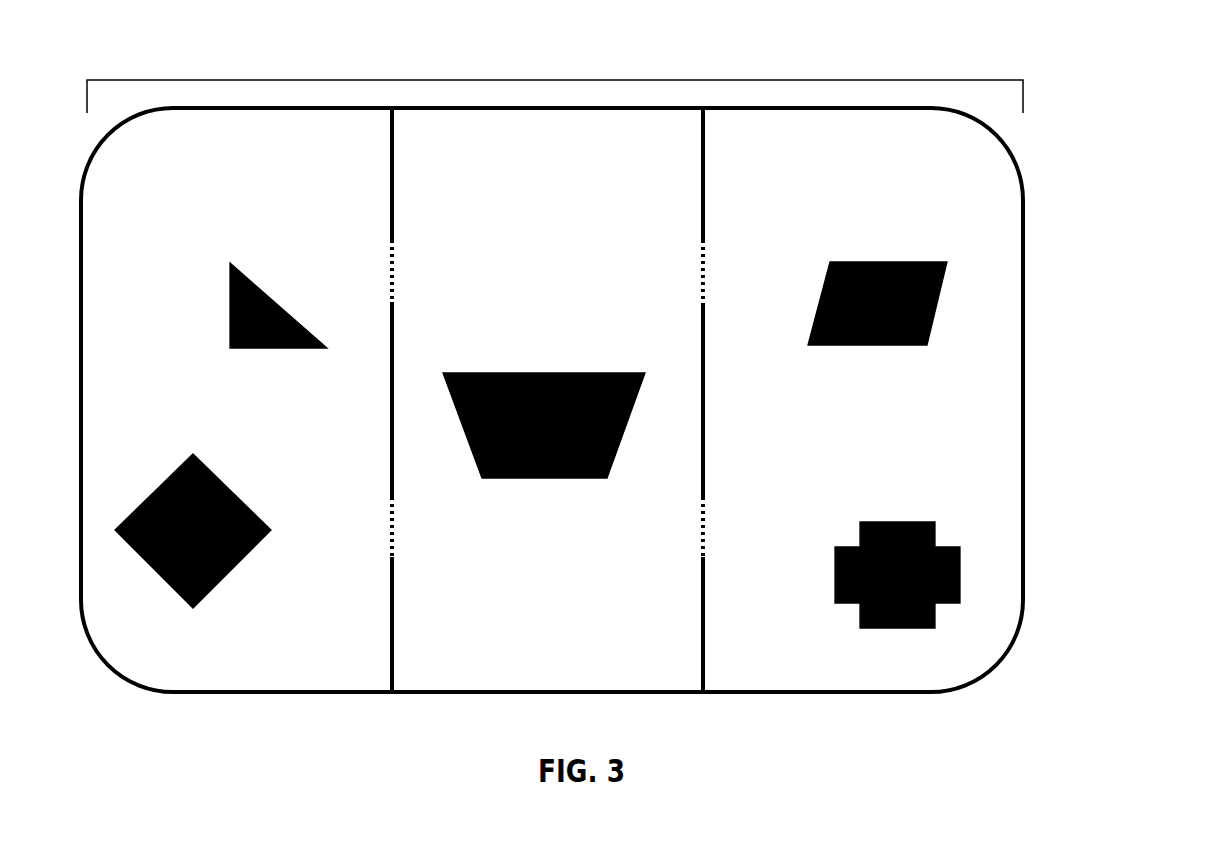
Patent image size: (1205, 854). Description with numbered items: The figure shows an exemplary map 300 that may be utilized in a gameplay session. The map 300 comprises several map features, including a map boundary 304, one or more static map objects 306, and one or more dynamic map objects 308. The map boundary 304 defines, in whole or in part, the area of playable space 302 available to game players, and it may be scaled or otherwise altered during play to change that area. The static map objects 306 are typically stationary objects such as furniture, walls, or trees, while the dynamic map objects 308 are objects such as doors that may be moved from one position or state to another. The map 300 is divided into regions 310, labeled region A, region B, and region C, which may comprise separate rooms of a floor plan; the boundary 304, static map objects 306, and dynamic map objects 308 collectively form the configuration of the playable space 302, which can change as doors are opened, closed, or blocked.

The map 300 is at (629, 400).
The playable space 302 is at (555, 80).
The map boundary 304 is at (1027, 357).
The static map object 306 is at (704, 195).
The dynamic map object 308 is at (394, 265).
The region 310 is at (537, 308).